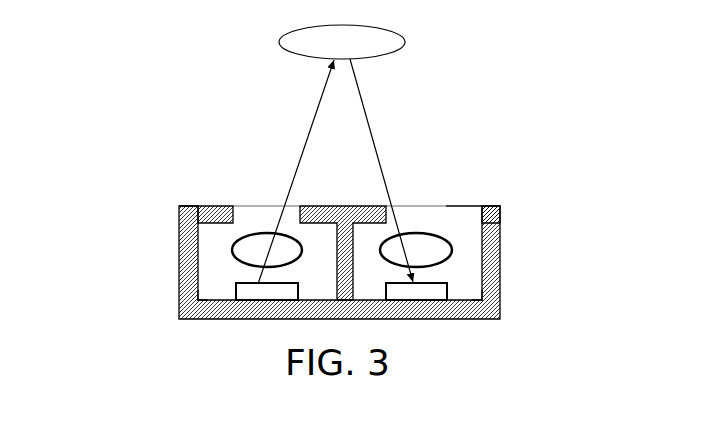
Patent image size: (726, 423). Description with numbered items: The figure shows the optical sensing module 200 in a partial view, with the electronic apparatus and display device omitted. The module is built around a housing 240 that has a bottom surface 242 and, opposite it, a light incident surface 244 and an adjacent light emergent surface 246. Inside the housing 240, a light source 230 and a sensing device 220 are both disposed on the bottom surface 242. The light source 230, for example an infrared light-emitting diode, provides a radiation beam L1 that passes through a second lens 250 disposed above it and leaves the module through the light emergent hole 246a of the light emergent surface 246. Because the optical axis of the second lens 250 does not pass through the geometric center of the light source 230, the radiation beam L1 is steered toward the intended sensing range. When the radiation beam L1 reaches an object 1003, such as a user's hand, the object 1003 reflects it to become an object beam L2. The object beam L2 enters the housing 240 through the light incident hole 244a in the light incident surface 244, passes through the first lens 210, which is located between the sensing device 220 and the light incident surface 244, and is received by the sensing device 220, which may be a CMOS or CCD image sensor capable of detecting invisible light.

The optical sensing module 200 is at (382, 241).
The housing 240 is at (180, 273).
The bottom surface 242 is at (222, 298).
The light incident surface 244 is at (470, 202).
The light incident hole 244a is at (418, 202).
The light emergent surface 246 is at (207, 203).
The light emergent hole 246a is at (260, 203).
The second lens 250 is at (247, 245).
The first lens 210 is at (435, 245).
The light source 230 is at (243, 296).
The sensing device 220 is at (446, 297).
The object 1003 is at (398, 34).
The radiation beam L1 is at (313, 125).
The object beam L2 is at (372, 136).